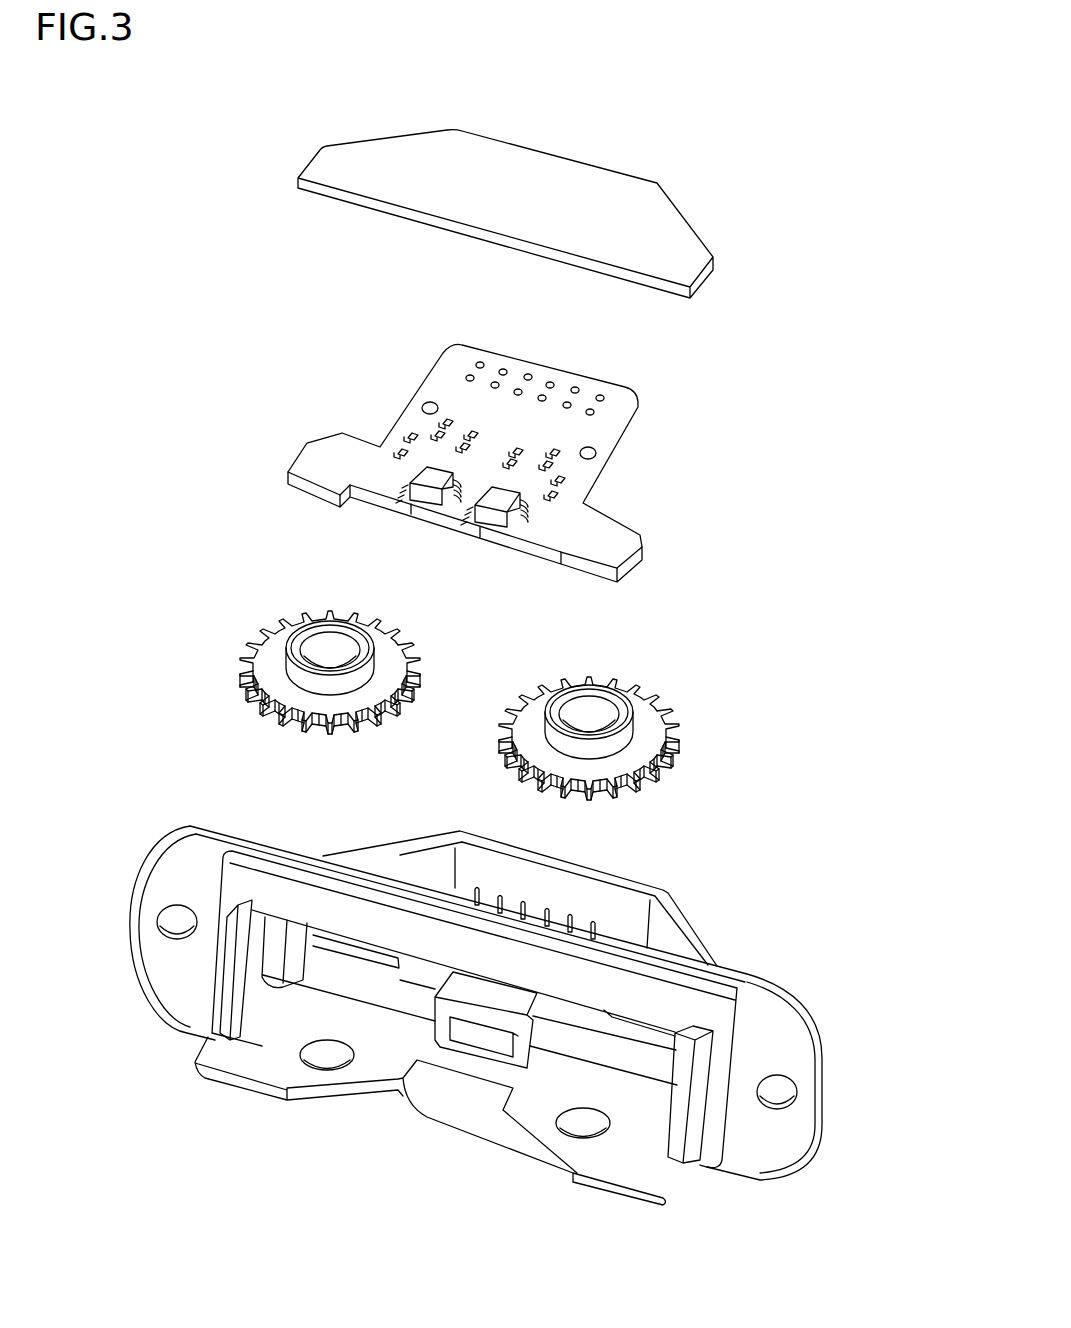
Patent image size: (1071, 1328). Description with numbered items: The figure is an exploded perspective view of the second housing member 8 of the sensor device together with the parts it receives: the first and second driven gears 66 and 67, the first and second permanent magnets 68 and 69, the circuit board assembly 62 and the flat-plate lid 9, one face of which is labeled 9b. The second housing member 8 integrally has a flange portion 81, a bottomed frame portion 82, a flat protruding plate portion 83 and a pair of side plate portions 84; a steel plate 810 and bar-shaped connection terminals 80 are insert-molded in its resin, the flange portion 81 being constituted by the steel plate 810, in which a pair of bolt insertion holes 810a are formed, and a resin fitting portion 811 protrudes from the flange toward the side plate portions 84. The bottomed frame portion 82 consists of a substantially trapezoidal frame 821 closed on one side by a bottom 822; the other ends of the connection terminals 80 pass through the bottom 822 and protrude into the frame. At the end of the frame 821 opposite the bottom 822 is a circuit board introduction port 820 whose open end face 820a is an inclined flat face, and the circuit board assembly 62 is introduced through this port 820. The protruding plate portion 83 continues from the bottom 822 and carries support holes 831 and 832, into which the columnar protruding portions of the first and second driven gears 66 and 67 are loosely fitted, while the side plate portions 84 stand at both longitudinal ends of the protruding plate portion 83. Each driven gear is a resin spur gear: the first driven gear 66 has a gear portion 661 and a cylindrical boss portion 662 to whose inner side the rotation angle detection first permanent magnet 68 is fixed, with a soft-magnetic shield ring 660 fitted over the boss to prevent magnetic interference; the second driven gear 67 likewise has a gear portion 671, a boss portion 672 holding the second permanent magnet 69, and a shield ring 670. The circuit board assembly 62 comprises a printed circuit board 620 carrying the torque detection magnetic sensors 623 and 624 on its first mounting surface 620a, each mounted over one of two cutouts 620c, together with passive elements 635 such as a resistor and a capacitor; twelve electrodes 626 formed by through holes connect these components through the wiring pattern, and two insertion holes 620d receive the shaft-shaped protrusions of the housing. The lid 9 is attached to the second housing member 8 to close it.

The lid 9 is at (533, 147).
The cover top surface 9b is at (588, 183).
The circuit board assembly 62 is at (286, 418).
The printed circuit board 620 is at (613, 470).
The first mounting surface 620a is at (508, 418).
The cutouts 620c is at (473, 542).
The insertion holes 620d is at (427, 405).
The torque detection magnetic sensor 623 is at (497, 505).
The torque detection magnetic sensor 624 is at (433, 487).
The electrodes 626 is at (528, 377).
The passive elements 635 is at (475, 430).
The first driven gear 66 is at (679, 685).
The magnetic shield ring 660 is at (610, 745).
The gear portion 661 is at (680, 735).
The boss portion 662 is at (615, 688).
The second driven gear 67 is at (434, 632).
The magnetic shield ring 670 is at (310, 680).
The gear portion 671 is at (242, 653).
The boss portion 672 is at (288, 633).
The rotation angle detection first permanent magnet 68 is at (582, 717).
The rotation angle detection second permanent magnet 69 is at (328, 652).
The second housing member 8 is at (503, 1170).
The connection terminals 80 is at (527, 903).
The flange portion 81 is at (116, 846).
The steel plate 810 is at (824, 1047).
The bolt insertion holes 810a is at (158, 917).
The fitting portion 811 is at (715, 1000).
The bottomed frame portion 82 is at (287, 772).
The circuit board introduction port 820 is at (619, 897).
The open end face 820a is at (678, 922).
The frame 821 is at (388, 843).
The bottom 822 is at (408, 968).
The protruding plate portion 83 is at (222, 1078).
The support hole 831 is at (583, 1143).
The support hole 832 is at (317, 1070).
The side plate portions 84 is at (210, 1002).